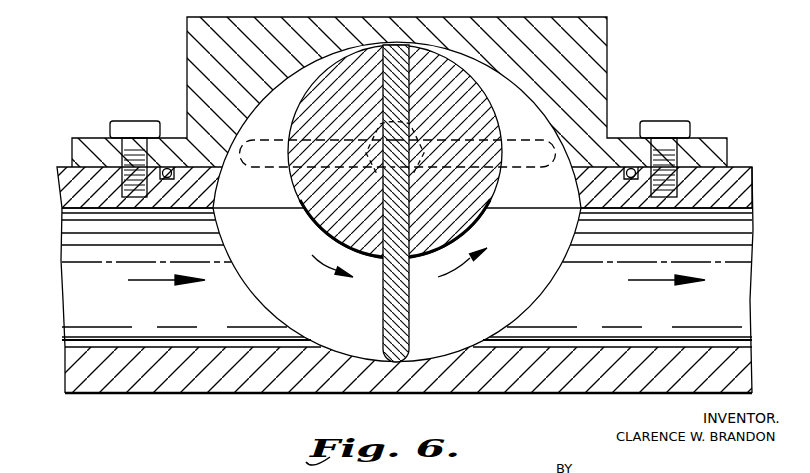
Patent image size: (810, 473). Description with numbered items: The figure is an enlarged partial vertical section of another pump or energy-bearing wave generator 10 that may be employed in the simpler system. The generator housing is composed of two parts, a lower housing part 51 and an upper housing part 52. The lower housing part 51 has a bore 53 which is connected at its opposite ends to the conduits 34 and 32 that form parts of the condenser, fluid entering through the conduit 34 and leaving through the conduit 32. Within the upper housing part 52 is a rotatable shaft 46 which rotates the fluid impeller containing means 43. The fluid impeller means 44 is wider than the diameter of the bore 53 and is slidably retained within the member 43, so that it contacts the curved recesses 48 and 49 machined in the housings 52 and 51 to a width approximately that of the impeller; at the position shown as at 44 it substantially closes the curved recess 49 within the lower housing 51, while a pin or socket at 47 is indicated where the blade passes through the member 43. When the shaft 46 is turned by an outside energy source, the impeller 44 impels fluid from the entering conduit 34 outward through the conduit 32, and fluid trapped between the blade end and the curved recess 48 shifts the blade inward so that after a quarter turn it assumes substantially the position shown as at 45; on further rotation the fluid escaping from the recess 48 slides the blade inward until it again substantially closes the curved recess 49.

The ball valve 10 is at (462, 398).
The conduit 32 is at (748, 197).
The conduit 34 is at (72, 192).
The fluid impeller containing means 43 is at (328, 218).
The fluid impeller means 44 is at (410, 299).
The impeller position 45 is at (541, 167).
The rotatable shaft 46 is at (372, 175).
The stem socket 47 is at (415, 194).
The curved recess 48 is at (226, 175).
The curved recess 49 is at (258, 298).
The housing part 51 is at (618, 381).
The housing part 52 is at (597, 68).
The bore 53 is at (258, 323).